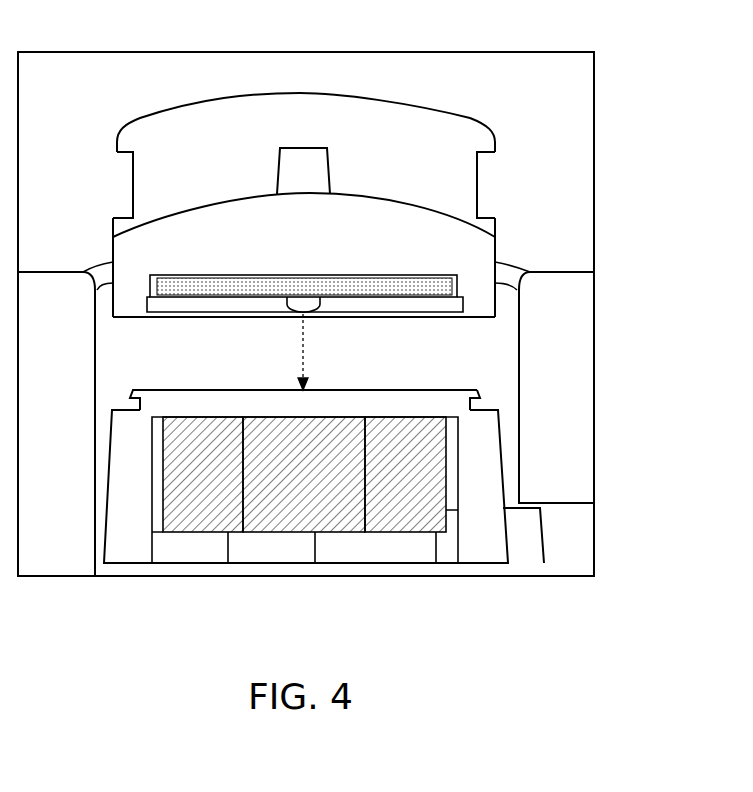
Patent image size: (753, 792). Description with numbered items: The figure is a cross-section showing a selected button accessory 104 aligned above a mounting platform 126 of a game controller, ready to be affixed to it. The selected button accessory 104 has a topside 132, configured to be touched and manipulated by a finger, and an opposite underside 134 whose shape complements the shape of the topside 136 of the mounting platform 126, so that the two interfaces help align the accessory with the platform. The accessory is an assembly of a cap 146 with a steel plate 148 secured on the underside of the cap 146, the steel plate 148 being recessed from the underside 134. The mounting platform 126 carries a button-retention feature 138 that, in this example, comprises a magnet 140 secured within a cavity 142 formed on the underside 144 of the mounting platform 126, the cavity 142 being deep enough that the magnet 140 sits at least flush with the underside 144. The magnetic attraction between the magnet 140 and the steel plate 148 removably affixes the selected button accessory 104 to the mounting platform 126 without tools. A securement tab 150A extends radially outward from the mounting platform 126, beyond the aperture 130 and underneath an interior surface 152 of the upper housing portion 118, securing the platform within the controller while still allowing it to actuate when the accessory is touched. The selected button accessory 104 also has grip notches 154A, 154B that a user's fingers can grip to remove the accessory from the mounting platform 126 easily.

The selected button accessory 104 is at (498, 92).
The upper housing portion 118 is at (567, 366).
The mounting platform 126 is at (413, 360).
The aperture 130 is at (517, 248).
The topside 132 is at (343, 93).
The underside 134 is at (122, 318).
The topside of the mounting platform 136 is at (172, 390).
The button-retention feature 138 is at (373, 585).
The magnet 140 is at (330, 532).
The cavity 142 is at (198, 587).
The underside of the mounting platform 144 is at (470, 565).
The cap 146 is at (113, 248).
The steel plate 148 is at (330, 275).
The securement tab 150A is at (536, 565).
The interior surface 152 is at (570, 506).
The grip notch 154A is at (133, 180).
The grip notch 154B is at (477, 182).